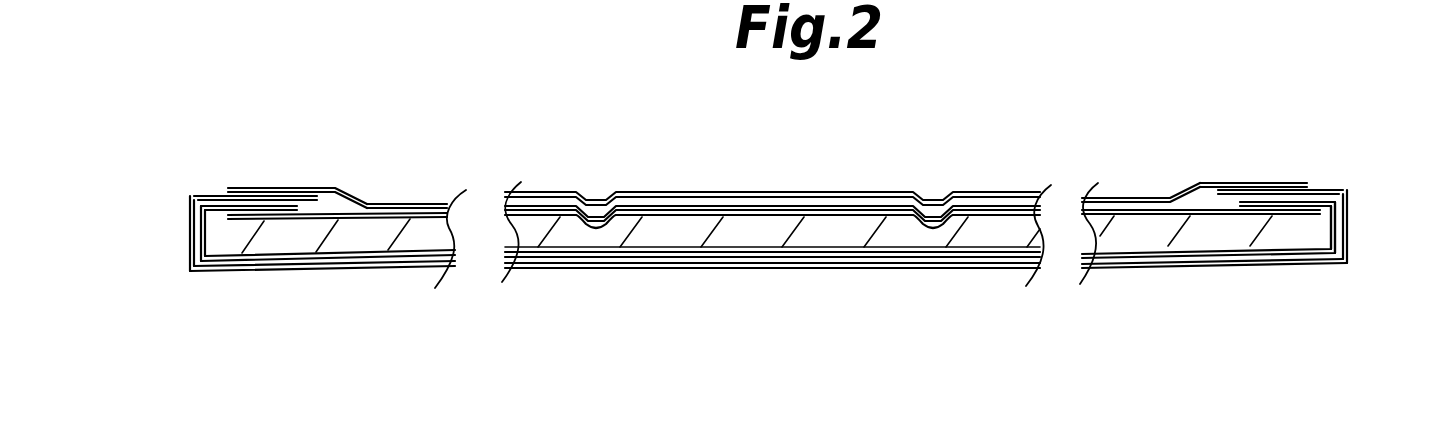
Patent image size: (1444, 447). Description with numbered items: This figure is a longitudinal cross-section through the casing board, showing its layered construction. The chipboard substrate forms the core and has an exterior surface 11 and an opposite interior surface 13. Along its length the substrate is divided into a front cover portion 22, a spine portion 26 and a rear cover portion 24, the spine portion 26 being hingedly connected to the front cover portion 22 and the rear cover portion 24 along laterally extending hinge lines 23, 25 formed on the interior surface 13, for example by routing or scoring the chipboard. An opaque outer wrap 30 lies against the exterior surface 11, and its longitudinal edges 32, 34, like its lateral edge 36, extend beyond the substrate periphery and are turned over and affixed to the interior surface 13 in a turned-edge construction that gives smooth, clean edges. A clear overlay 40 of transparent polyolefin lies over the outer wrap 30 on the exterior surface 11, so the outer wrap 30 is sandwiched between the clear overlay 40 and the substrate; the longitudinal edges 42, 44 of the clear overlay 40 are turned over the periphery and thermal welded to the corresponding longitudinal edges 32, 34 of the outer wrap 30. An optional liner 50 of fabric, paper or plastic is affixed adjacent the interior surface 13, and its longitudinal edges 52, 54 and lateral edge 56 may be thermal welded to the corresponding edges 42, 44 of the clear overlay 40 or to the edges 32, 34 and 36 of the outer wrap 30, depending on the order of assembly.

The exterior surface 11 is at (652, 257).
The interior surface 13 is at (722, 216).
The front cover portion 22 is at (383, 243).
The hinge line 23 is at (597, 226).
The rear cover portion 24 is at (1146, 238).
The hinge line 25 is at (936, 224).
The spine portion 26 is at (825, 236).
The outer wrap 30 is at (290, 258).
The longitudinal edge of outer wrap 32 is at (205, 215).
The longitudinal edge of outer wrap 34 is at (1326, 206).
The lateral edge of outer wrap 36 is at (323, 212).
The clear overlay 40 is at (227, 271).
The longitudinal edge of clear overlay 42 is at (204, 203).
The longitudinal edge of clear overlay 44 is at (1318, 190).
The liner 50 is at (391, 203).
The longitudinal edge of liner 52 is at (255, 187).
The longitudinal edge of liner 54 is at (1246, 183).
The lateral edge of liner 56 is at (835, 193).